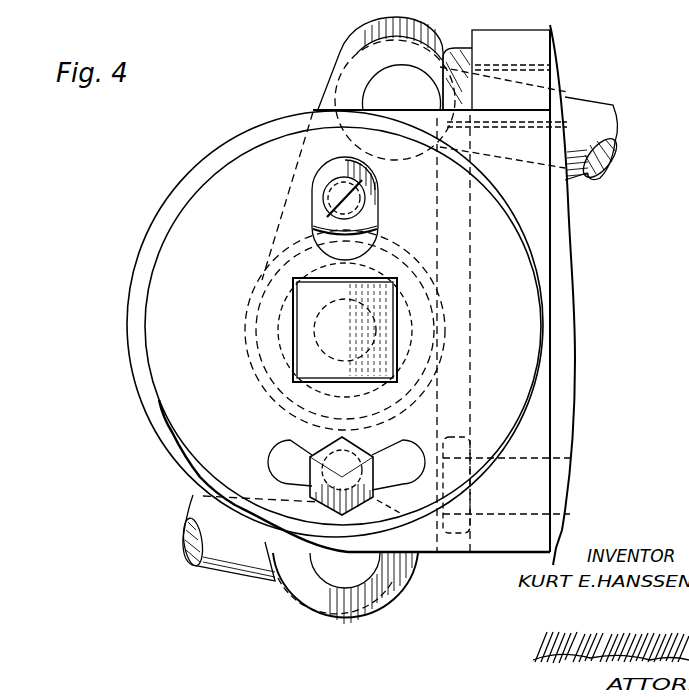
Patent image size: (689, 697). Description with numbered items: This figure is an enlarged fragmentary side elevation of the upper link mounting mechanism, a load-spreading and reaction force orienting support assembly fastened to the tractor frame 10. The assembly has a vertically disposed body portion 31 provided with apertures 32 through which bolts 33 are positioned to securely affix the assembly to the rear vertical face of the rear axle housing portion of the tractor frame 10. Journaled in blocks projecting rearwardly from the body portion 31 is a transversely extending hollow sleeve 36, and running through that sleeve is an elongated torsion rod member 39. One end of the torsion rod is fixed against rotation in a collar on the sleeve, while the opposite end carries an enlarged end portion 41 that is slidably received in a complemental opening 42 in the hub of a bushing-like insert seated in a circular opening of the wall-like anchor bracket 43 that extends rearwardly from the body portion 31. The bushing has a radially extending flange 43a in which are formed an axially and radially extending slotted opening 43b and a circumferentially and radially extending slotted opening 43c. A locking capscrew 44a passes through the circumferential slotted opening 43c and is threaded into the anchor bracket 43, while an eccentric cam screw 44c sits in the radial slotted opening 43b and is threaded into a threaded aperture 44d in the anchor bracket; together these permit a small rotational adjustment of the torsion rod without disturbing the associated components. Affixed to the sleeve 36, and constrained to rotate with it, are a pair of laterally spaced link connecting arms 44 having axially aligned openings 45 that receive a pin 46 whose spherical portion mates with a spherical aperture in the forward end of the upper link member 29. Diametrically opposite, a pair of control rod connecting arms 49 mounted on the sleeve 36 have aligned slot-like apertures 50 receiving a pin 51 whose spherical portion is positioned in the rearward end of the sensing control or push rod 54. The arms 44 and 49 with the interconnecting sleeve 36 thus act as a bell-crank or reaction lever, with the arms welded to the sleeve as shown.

The tractor frame 10 is at (577, 317).
The upper link member 29 is at (228, 527).
The body portion 31 is at (522, 50).
The apertures 32 is at (487, 458).
The bolts 33 is at (457, 65).
The sleeve 36 is at (253, 297).
The torsion rod member 39 is at (400, 345).
The enlarged end portion 41 is at (352, 338).
The complemental opening 42 is at (300, 338).
The anchor bracket 43 is at (150, 247).
The radially extending flange 43a is at (167, 310).
The slotted opening 43b is at (370, 217).
The slotted opening 43c is at (270, 460).
The link connecting arms 44 is at (252, 400).
The locking capscrew 44a is at (341, 476).
The eccentric cam screw 44c is at (323, 175).
The threaded aperture 44d is at (325, 207).
The openings 45 is at (352, 586).
The pin 46 is at (333, 573).
The control rod connecting arms 49 is at (325, 98).
The apertures 50 is at (367, 50).
The pin 51 is at (410, 100).
The push rod 54 is at (585, 118).